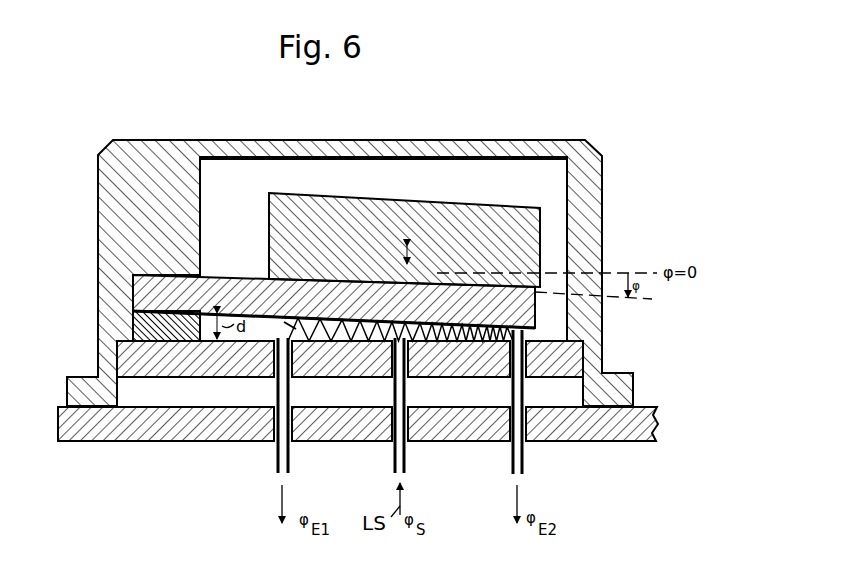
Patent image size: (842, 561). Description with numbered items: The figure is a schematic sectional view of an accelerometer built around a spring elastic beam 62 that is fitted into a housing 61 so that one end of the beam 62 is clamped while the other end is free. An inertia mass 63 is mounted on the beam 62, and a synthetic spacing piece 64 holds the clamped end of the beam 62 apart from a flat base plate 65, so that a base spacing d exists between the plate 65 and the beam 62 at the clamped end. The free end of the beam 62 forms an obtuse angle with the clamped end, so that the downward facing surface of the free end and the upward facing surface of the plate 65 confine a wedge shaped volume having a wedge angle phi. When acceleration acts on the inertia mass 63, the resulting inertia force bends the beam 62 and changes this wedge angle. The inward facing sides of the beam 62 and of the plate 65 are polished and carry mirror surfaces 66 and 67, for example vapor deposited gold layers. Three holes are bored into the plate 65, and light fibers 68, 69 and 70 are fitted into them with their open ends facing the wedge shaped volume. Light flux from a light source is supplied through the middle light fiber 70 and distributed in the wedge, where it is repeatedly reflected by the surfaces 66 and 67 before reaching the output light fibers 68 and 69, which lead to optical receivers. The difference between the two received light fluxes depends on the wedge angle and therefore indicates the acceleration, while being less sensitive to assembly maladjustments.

The housing 61 is at (179, 160).
The spring elastic beam 62 is at (216, 285).
The inertia mass 63 is at (390, 202).
The synthetic spacing piece 64 is at (135, 322).
The flat base plate 65 is at (198, 360).
The mirror surface 66 is at (286, 326).
The mirror surface 67 is at (318, 342).
The light fiber 68 is at (275, 469).
The light fiber 69 is at (525, 463).
The light fiber 70 is at (407, 456).